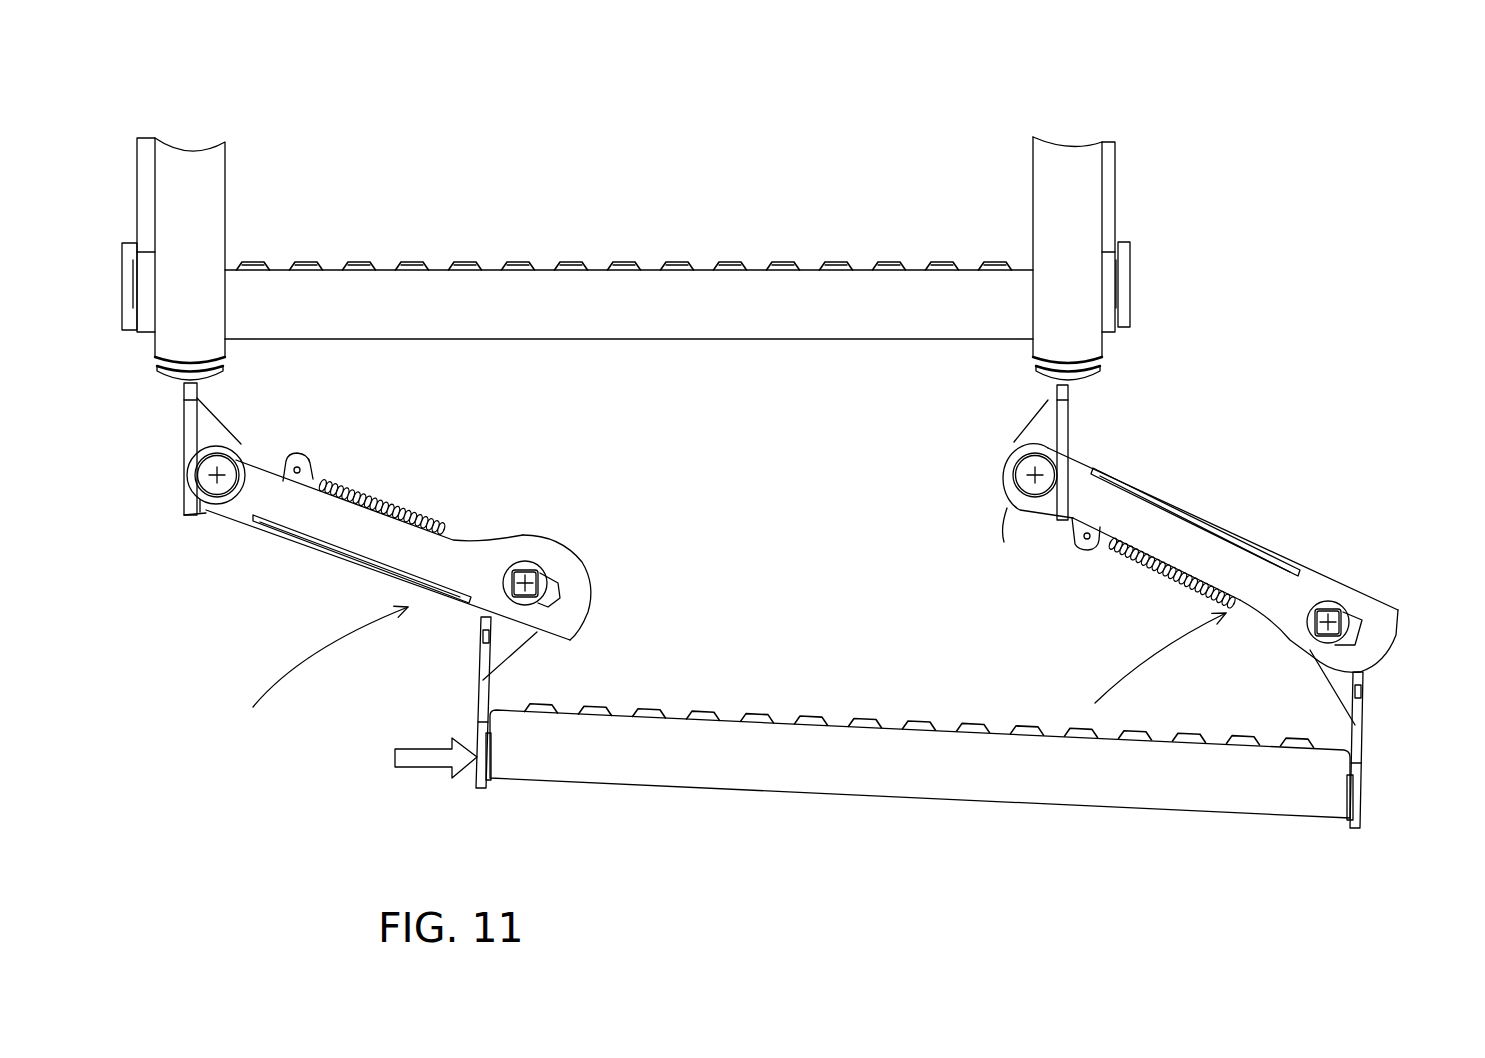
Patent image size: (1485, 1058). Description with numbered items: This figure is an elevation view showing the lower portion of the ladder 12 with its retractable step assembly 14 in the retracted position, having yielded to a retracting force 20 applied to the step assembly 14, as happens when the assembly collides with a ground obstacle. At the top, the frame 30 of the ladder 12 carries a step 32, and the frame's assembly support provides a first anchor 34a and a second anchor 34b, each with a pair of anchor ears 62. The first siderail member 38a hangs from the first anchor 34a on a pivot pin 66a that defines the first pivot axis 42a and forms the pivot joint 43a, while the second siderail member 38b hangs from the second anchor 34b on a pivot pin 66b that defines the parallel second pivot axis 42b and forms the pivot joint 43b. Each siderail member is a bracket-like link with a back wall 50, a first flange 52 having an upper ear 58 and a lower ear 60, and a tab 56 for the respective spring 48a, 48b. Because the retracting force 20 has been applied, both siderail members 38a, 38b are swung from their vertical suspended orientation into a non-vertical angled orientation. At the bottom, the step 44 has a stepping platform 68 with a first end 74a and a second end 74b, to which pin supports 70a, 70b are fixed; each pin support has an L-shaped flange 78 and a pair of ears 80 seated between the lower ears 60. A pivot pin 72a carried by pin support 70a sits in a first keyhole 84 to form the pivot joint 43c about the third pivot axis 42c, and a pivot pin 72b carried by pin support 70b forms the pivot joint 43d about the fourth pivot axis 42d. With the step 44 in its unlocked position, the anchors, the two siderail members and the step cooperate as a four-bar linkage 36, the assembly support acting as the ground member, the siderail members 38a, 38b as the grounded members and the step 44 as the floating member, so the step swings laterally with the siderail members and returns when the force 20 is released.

The ladder 12 is at (1097, 90).
The step assembly 14 is at (1282, 380).
The retracting force 20 is at (393, 757).
The frame 30 is at (1125, 340).
The steps 32 is at (540, 282).
The first anchor 34a is at (1070, 424).
The second anchor 34b is at (186, 431).
The four-bar linkage 36 is at (1212, 390).
The first siderail member 38a is at (1189, 501).
The second siderail member 38b is at (298, 563).
The first pivot axis 42a is at (1024, 486).
The second pivot axis 42b is at (222, 472).
The third pivot axis 42c is at (1338, 609).
The fourth pivot axis 42d is at (530, 570).
The pivot joint 43a is at (992, 460).
The pivot joint 43b is at (177, 466).
The pivot joint 43c is at (1333, 562).
The pivot joint 43d is at (497, 527).
The step 44 is at (794, 820).
The spring 48a is at (1150, 577).
The spring 48b is at (382, 503).
The back wall 50 is at (329, 558).
The first flange 52 is at (376, 538).
The tab 56 is at (301, 458).
The upper ear 58 is at (200, 504).
The lower ear 60 is at (572, 577).
The anchor ears 62 is at (207, 410).
The pivot pin 66a is at (1041, 485).
The pivot pin 66b is at (222, 487).
The stepping platform 68 is at (908, 768).
The pin support 70a is at (1371, 772).
The pin support 70b is at (470, 708).
The pivot pin 72a is at (1348, 614).
The pivot pin 72b is at (526, 566).
The first end 74a is at (1333, 803).
The second end 74b is at (493, 782).
The flange 78 is at (479, 653).
The ears 80 is at (511, 644).
The first keyhole 84 is at (508, 579).